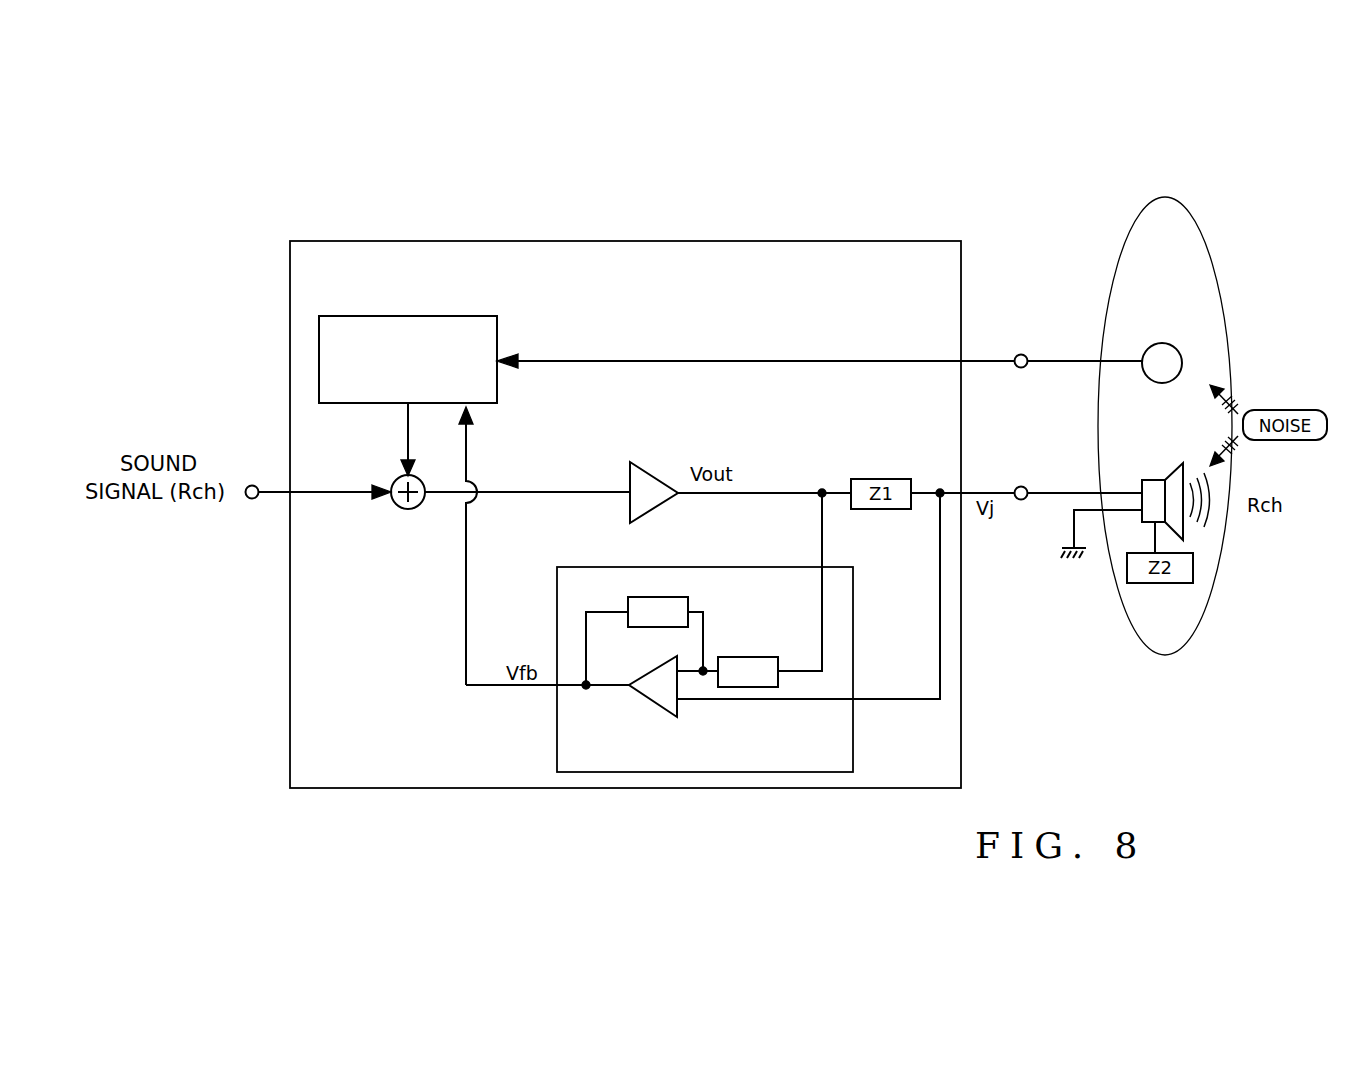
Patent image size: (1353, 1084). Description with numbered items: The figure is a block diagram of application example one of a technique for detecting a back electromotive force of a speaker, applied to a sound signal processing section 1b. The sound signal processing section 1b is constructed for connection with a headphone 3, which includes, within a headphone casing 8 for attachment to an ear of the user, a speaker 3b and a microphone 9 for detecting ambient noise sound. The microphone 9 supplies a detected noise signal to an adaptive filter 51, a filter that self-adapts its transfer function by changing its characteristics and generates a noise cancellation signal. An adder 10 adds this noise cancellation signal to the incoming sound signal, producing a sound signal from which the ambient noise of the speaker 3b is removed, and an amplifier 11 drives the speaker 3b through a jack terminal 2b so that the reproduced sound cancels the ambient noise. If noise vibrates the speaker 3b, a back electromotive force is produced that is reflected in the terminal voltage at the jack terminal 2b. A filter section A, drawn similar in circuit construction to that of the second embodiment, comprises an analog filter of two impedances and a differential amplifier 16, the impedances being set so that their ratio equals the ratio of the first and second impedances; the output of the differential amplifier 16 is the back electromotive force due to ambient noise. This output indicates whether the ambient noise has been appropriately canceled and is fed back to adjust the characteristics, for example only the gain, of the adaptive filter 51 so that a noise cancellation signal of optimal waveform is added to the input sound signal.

The sound signal processing section 1b is at (366, 241).
The adaptive filter 51 is at (455, 316).
The adder 10 is at (398, 477).
The amplifier 11 is at (632, 474).
The differential amplifier 16 is at (655, 706).
The filter section A is at (855, 621).
The jack terminal 2b is at (1023, 486).
The speaker 3b is at (1173, 476).
The microphone 9 is at (1152, 345).
The headphone casing 8 is at (1116, 255).
The headphone 3 is at (1232, 262).